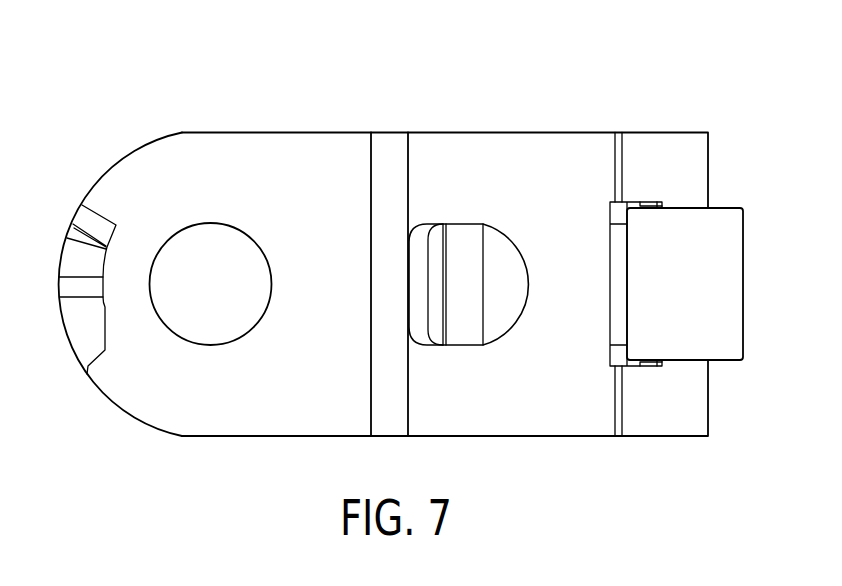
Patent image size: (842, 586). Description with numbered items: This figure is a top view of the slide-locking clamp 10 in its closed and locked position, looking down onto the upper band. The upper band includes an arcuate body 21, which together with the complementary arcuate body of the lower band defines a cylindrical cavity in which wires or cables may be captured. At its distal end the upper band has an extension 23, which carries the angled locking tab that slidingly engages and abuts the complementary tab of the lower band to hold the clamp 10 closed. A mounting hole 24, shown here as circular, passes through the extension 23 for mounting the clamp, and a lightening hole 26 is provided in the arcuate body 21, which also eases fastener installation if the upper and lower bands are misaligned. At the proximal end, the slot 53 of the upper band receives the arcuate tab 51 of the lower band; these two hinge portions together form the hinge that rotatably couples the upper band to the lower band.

The clamp 10 is at (108, 58).
The arcuate body 21 is at (535, 140).
The extension 23 is at (290, 140).
The mounting hole 24 is at (186, 323).
The lightening hole 26 is at (425, 323).
The arcuate tab 51 is at (730, 282).
The slot 53 is at (606, 322).